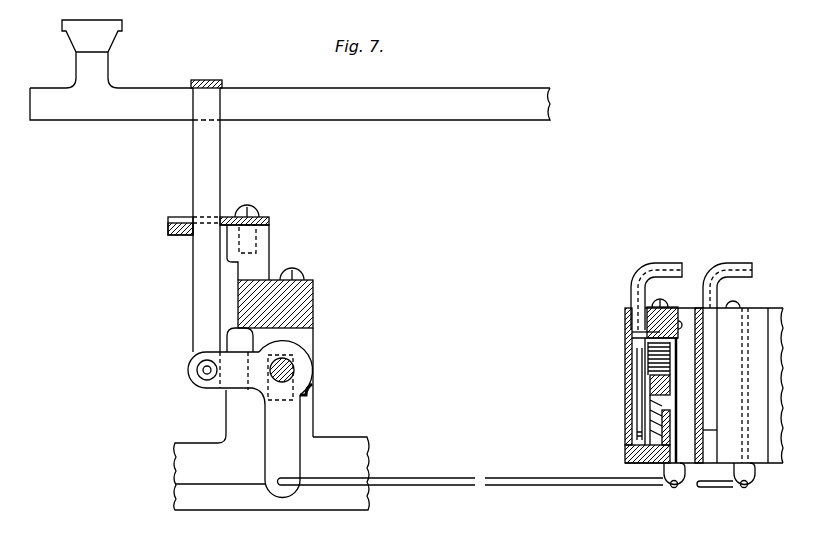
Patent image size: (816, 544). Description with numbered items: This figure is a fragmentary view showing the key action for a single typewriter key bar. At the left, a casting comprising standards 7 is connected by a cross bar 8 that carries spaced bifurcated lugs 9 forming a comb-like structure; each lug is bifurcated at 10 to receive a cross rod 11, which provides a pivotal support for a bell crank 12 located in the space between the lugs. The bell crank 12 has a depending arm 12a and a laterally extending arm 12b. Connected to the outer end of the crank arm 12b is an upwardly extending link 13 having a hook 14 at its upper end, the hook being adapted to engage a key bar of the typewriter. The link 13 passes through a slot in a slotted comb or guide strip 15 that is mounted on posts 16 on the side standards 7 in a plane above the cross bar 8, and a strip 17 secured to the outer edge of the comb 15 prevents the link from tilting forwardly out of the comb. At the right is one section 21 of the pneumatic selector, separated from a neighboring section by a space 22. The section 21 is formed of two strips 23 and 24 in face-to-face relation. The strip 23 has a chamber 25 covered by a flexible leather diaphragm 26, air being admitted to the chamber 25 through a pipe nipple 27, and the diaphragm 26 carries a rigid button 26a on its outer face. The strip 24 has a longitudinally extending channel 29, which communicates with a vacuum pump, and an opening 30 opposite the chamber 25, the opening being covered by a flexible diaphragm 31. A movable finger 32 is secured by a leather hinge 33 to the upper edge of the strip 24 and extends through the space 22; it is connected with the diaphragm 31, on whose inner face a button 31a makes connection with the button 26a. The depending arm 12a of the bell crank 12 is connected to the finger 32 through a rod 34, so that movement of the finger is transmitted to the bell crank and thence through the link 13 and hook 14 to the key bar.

The standard 7 is at (235, 417).
The cross bar 8 is at (305, 303).
The bifurcated lug 9 is at (307, 347).
The bifurcation 10 is at (298, 360).
The cross rod 11 is at (294, 371).
The bell crank 12 is at (308, 385).
The depending arm 12a is at (288, 442).
The laterally extending arm 12b is at (186, 375).
The link 13 is at (205, 294).
The hook 14 is at (209, 86).
The slotted comb 15 is at (268, 218).
The post 16 is at (270, 240).
The strip 17 is at (170, 237).
The section 21 is at (625, 452).
The space 22 is at (688, 460).
The strip 23 is at (625, 322).
The strip 24 is at (632, 336).
The chamber 25 is at (645, 440).
The diaphragm 26 is at (640, 432).
The button 26a is at (637, 398).
The pipe nipple 27 is at (637, 312).
The channel 29 is at (658, 475).
The opening 30 is at (660, 412).
The diaphragm 31 is at (668, 370).
The button 31a is at (655, 388).
The movable finger 32 is at (680, 437).
The leather hinge 33 is at (686, 305).
The rod 34 is at (471, 486).